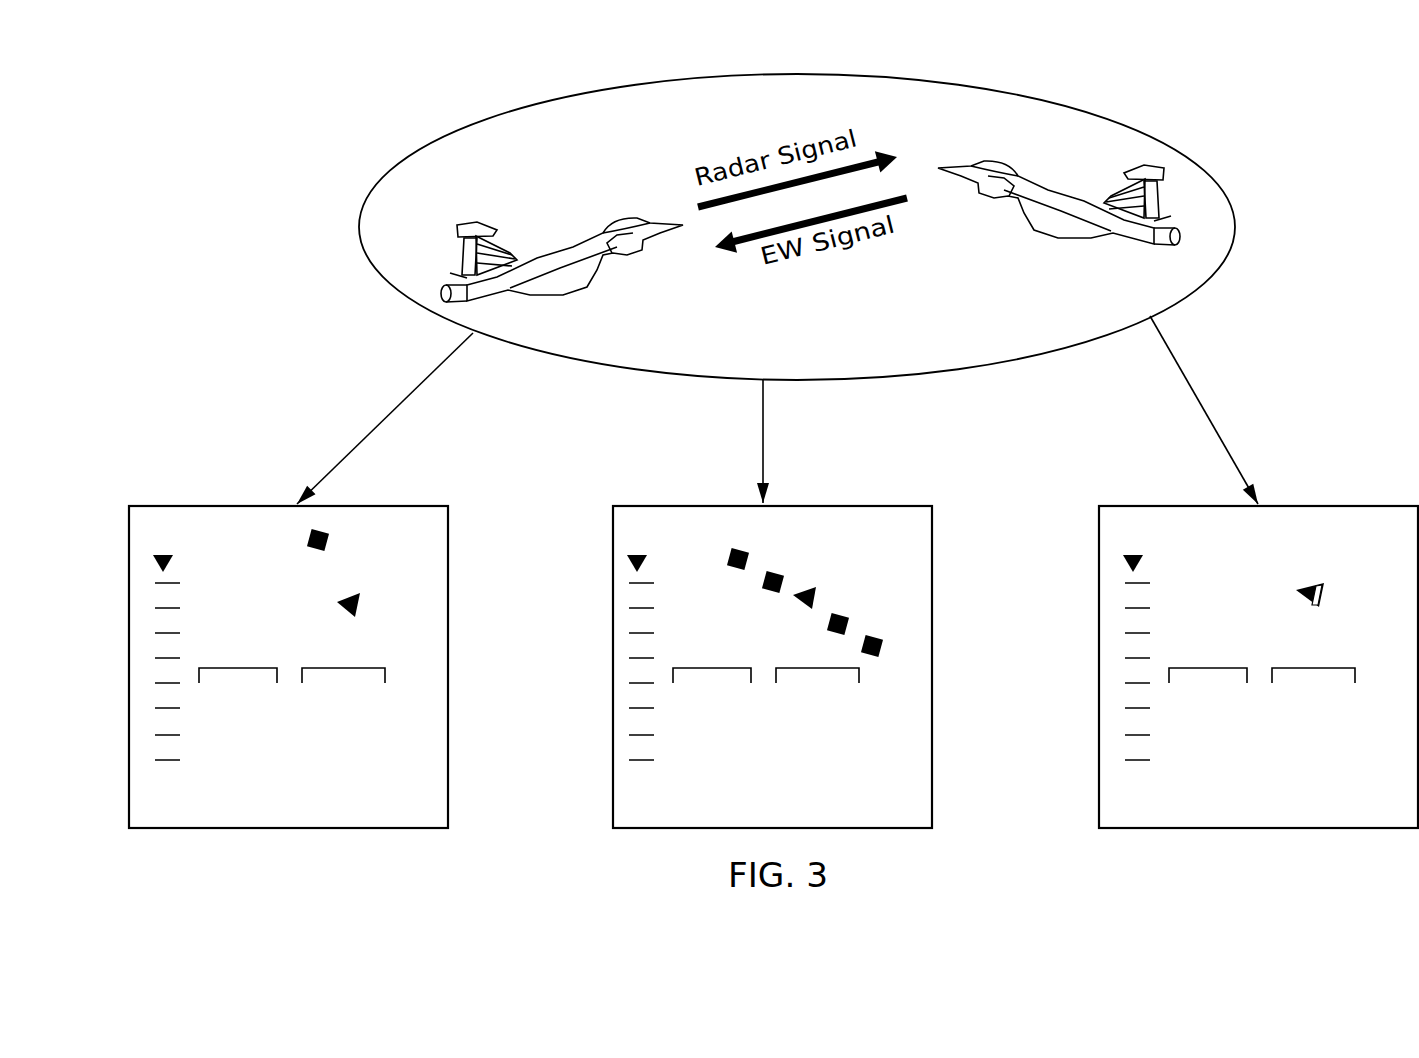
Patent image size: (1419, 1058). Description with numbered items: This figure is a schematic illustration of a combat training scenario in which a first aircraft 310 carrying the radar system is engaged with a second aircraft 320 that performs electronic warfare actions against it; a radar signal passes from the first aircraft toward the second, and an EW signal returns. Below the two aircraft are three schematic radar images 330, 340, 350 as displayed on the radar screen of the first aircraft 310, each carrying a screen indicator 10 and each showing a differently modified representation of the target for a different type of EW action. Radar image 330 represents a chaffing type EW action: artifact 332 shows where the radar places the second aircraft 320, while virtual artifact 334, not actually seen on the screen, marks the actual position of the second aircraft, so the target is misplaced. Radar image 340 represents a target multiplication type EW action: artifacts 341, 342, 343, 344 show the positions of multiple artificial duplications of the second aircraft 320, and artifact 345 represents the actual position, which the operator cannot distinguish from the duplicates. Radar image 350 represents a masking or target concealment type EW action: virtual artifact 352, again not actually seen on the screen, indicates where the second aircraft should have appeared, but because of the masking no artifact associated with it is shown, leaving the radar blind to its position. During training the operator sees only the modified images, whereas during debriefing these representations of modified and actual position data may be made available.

The range scale indicator 10 is at (649, 548).
The first aircraft 310 is at (612, 226).
The second aircraft 320 is at (1035, 178).
The radar image 330 is at (223, 483).
The artifact 332 is at (330, 545).
The virtual artifact 334 is at (362, 602).
The radar image 340 is at (696, 483).
The artifact 341 is at (774, 536).
The artifact 342 is at (782, 577).
The artifact 343 is at (849, 623).
The artifact 344 is at (880, 639).
The artifact 345 is at (820, 597).
The radar image 350 is at (1191, 483).
The virtual artifact 352 is at (1323, 593).